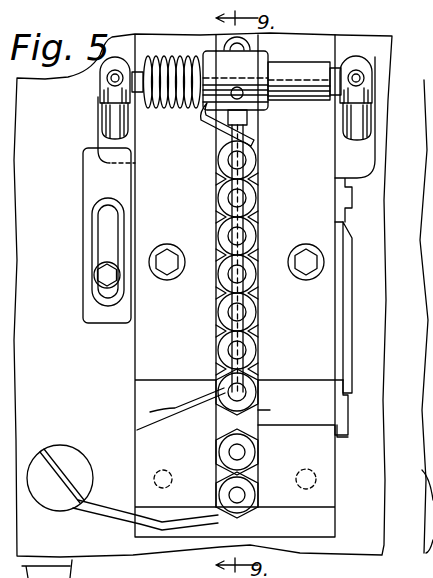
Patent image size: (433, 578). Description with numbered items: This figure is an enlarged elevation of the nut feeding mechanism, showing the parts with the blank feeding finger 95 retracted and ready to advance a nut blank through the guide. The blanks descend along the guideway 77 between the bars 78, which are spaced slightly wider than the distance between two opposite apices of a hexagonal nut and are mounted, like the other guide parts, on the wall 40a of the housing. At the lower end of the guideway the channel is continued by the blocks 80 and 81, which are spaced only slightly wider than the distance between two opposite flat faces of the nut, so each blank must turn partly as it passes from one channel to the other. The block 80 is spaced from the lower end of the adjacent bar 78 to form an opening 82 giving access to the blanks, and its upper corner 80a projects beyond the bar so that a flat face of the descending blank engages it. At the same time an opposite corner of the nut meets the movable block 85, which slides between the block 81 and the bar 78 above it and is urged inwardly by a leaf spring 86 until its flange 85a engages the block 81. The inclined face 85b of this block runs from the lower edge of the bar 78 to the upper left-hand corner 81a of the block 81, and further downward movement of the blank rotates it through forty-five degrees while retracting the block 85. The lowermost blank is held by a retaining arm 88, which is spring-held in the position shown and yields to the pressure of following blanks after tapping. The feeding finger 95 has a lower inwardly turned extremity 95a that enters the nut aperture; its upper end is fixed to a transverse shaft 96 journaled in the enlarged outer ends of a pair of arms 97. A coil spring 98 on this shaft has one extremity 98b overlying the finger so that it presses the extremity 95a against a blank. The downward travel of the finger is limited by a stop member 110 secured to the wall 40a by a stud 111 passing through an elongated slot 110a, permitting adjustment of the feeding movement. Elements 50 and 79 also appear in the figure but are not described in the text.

The wall of the housing 40a is at (368, 402).
The roller 50 is at (247, 317).
The guideway 77 is at (122, 354).
The bars 78 is at (190, 331).
The bolt 79 is at (306, 250).
The block 80 is at (188, 457).
The upper corner of the block 80a is at (150, 412).
The block 81 is at (282, 491).
The upper left-hand corner of the block 81a is at (258, 428).
The opening 82 is at (156, 391).
The movable block 85 is at (318, 400).
The flange 85a is at (343, 434).
The inclined face 85b is at (250, 414).
The leaf spring 86 is at (350, 321).
The retaining arm 88 is at (108, 508).
The blank feeding finger 95 is at (236, 227).
The lower inwardly turned extremity of the feeding finger 95a is at (251, 396).
The transverse shaft 96 is at (315, 93).
The arms 97 is at (112, 118).
The coil spring 98 is at (190, 105).
The extremity of the coil spring 98b is at (213, 143).
The stop member 110 is at (97, 183).
The elongated slot 110a is at (103, 238).
The stud 111 is at (103, 274).